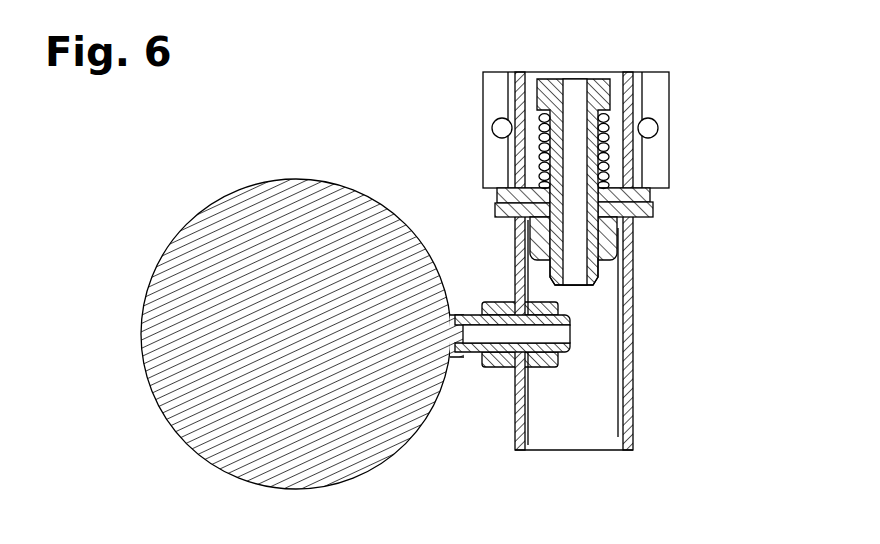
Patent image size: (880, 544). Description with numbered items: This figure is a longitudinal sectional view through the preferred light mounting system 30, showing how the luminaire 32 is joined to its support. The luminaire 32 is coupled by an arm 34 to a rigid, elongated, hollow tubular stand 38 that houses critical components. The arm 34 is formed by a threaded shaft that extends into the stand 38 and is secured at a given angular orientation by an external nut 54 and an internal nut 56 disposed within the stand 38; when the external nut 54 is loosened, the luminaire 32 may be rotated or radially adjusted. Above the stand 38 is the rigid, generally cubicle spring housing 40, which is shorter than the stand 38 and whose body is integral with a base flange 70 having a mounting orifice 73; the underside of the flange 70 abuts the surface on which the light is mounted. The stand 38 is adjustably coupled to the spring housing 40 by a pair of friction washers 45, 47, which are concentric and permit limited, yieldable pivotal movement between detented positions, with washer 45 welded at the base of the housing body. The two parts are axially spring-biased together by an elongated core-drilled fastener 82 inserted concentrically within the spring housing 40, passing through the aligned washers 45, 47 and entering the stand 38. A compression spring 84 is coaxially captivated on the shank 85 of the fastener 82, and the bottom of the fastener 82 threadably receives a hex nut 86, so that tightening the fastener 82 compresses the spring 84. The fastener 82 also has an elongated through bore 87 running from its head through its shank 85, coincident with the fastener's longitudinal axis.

The light mounting system 30 is at (334, 137).
The luminaire 32 is at (163, 240).
The arm 34 is at (588, 337).
The stand 38 is at (648, 405).
The spring housing 40 is at (683, 112).
The friction washer 45 is at (500, 195).
The friction washer 47 is at (648, 212).
The external nut 54 is at (490, 367).
The internal nut 56 is at (550, 367).
The base flange 70 is at (492, 168).
The mounting orifice 73 is at (494, 121).
The fastener 82 is at (548, 78).
The compression spring 84 is at (543, 132).
The shank 85 is at (600, 267).
The hex nut 86 is at (605, 238).
The through bore 87 is at (577, 92).